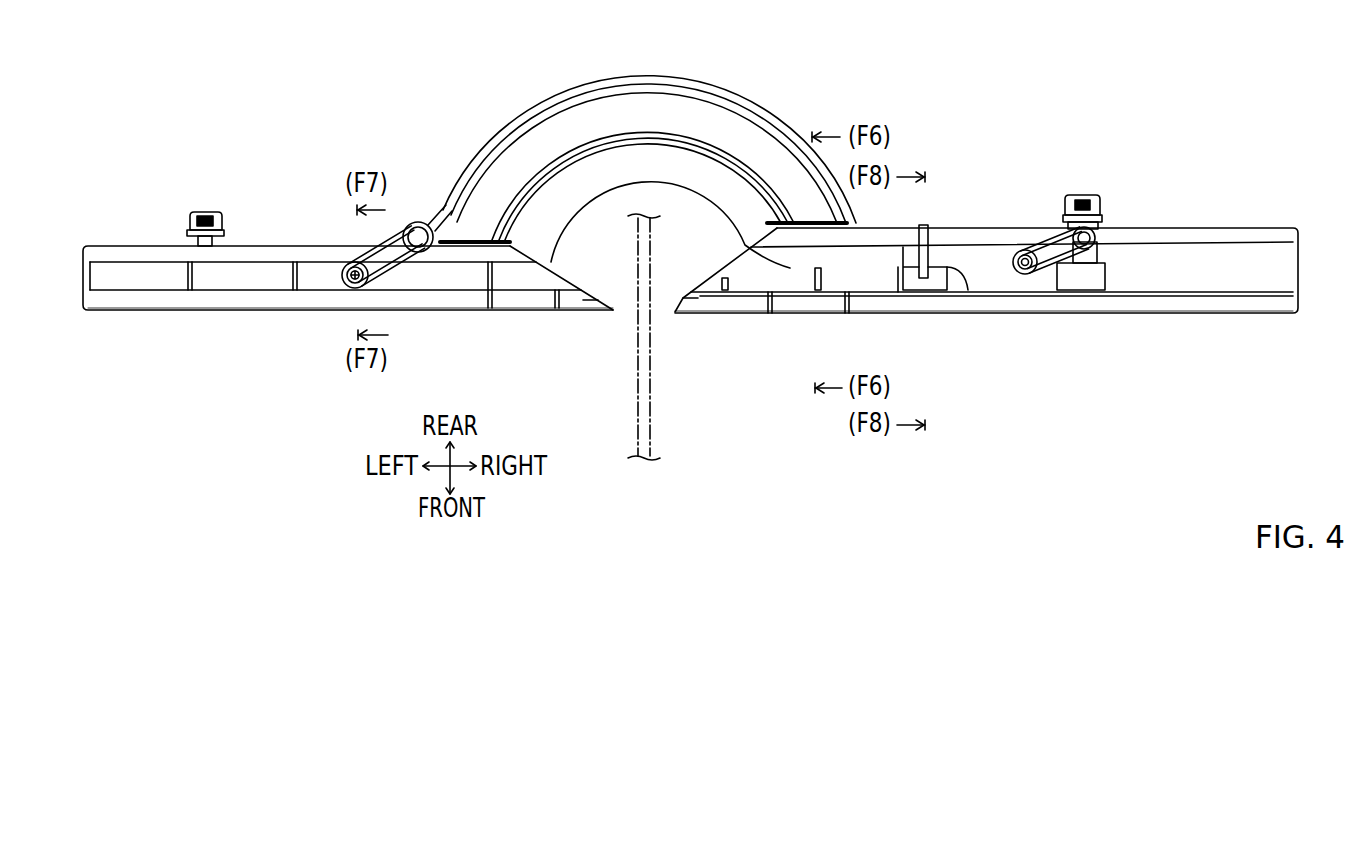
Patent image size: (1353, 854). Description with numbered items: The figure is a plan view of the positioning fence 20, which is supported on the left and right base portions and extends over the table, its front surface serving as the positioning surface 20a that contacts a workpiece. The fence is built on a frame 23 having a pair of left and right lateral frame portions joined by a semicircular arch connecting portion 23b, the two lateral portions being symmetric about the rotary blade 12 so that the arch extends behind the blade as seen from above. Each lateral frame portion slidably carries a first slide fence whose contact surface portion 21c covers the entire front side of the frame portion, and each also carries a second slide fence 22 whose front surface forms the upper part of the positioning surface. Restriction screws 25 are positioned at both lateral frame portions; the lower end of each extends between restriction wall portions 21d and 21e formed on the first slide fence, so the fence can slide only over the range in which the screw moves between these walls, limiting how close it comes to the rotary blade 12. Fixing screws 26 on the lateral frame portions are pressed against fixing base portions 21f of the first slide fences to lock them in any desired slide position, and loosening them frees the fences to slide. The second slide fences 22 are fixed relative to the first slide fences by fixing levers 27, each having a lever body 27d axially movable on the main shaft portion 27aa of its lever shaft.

The rotary blade 12 is at (648, 400).
The positioning fence 20 is at (958, 162).
The positioning surface 20a is at (700, 375).
The contact surface portion 21c is at (1217, 306).
The restriction wall portion 21d is at (899, 298).
The restriction wall portion 21e is at (962, 283).
The fixing base portion 21f is at (1100, 277).
The second slide fence 22 is at (248, 275).
The frame 23 is at (873, 162).
The semicircular arch connecting portion 23b is at (773, 160).
The restriction screw 25 is at (937, 258).
The fixing screw 26 is at (204, 211).
The fixing lever 27 is at (751, 279).
The main shaft portion 27aa is at (356, 283).
The lever body 27d is at (417, 234).